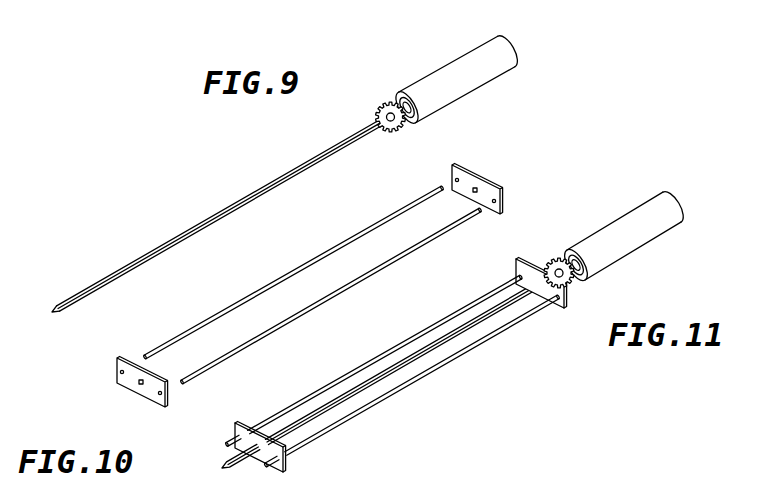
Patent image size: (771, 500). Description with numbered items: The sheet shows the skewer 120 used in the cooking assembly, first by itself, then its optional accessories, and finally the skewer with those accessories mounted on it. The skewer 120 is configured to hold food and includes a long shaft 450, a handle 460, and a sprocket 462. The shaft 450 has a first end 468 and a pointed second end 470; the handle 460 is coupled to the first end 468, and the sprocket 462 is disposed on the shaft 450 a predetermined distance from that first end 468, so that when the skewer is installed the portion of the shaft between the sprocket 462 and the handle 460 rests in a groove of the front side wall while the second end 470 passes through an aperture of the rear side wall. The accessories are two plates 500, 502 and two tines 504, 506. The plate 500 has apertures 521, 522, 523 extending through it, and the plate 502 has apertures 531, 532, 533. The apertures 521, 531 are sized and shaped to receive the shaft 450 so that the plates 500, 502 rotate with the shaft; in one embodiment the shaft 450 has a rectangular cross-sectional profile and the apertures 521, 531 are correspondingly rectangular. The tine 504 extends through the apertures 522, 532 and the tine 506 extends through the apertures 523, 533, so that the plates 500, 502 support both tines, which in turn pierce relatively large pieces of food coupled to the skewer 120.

In FIG. 9, the skewer 120 is at (327, 119).
In FIG. 11, the skewer 120 is at (583, 210).
In FIG. 9, the shaft 450 is at (197, 225).
In FIG. 11, the shaft 450 is at (422, 352).
In FIG. 9, the handle 460 is at (430, 84).
In FIG. 9, the sprocket 462 is at (378, 98).
In FIG. 9, the first end 468 is at (408, 121).
In FIG. 9, the second end 470 is at (52, 310).
In FIG. 10, the plate 500 is at (148, 391).
In FIG. 11, the plate 500 is at (286, 467).
In FIG. 10, the plate 502 is at (468, 183).
In FIG. 11, the plate 502 is at (566, 308).
In FIG. 10, the tine 504 is at (275, 283).
In FIG. 11, the tine 504 is at (298, 399).
In FIG. 10, the tine 506 is at (313, 306).
In FIG. 11, the tine 506 is at (372, 405).
In FIG. 10, the aperture 521 is at (140, 384).
In FIG. 10, the aperture 522 is at (120, 373).
In FIG. 10, the aperture 523 is at (170, 403).
In FIG. 10, the aperture 531 is at (478, 190).
In FIG. 10, the aperture 532 is at (458, 178).
In FIG. 10, the aperture 533 is at (500, 204).